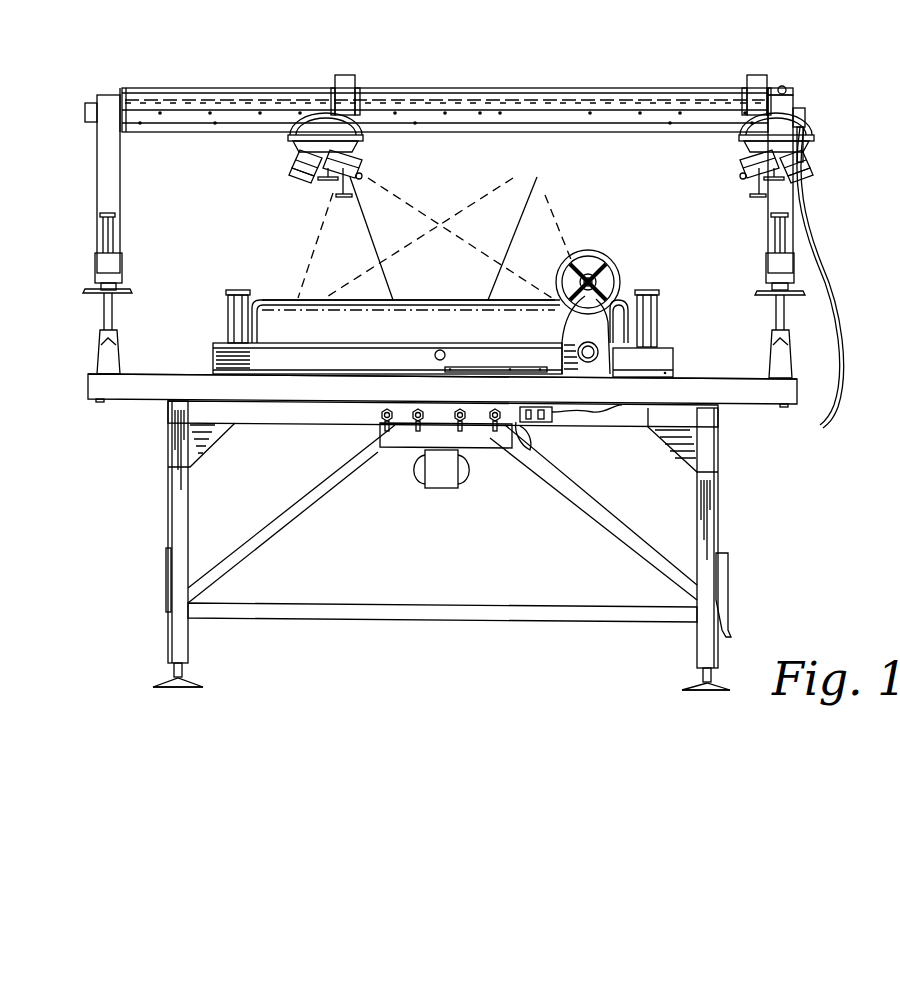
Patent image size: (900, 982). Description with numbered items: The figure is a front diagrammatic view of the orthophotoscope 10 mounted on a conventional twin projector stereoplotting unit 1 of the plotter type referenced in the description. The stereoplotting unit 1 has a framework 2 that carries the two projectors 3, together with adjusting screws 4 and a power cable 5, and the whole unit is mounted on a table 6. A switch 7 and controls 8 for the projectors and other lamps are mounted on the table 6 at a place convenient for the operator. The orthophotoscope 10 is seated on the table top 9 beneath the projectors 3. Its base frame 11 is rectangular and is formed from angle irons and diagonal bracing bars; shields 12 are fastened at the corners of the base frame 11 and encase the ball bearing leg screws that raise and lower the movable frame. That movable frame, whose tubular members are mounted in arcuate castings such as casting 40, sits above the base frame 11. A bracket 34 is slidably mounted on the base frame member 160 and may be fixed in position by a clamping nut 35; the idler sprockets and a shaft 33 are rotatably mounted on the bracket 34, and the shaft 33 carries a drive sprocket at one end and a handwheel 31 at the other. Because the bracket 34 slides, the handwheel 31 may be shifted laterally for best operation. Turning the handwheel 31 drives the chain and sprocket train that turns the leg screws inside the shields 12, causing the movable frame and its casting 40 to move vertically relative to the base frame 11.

The ER-55 conventional twin projector stereoplotting unit 1 is at (793, 192).
The framework 2 is at (797, 107).
The projectors 3 is at (360, 150).
The adjusting screws 4 is at (108, 310).
The power cable 5 is at (826, 312).
The table 6 is at (165, 433).
The switch 7 is at (542, 425).
The controls 8 is at (416, 432).
The table top 9 is at (135, 385).
The orthophotoscope 10 is at (282, 298).
The base frame 11 is at (213, 358).
The shields 12 is at (232, 312).
The handwheel 31 is at (598, 254).
The shaft 33 is at (597, 280).
The bracket 34 is at (580, 330).
The clamping nut 35 is at (592, 360).
The arcuate casting 40 is at (393, 320).
The base frame member 160 is at (662, 358).